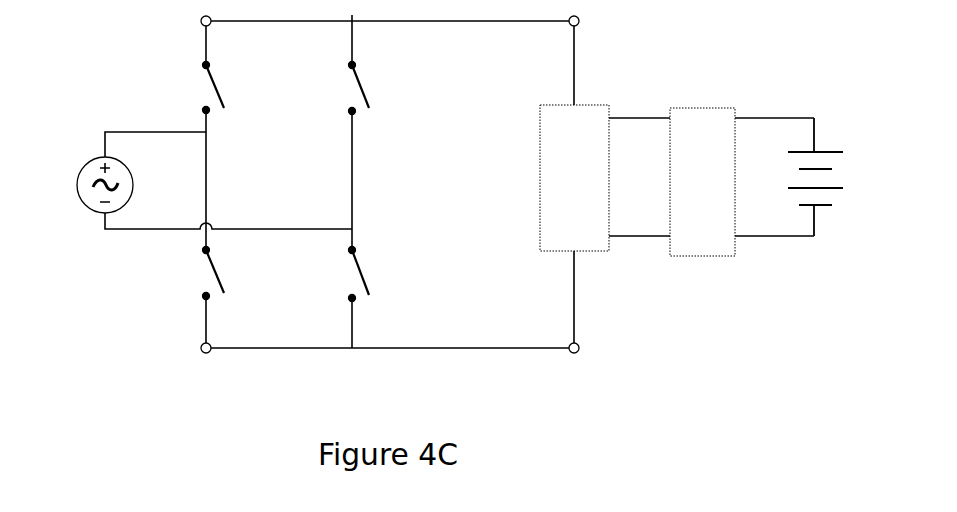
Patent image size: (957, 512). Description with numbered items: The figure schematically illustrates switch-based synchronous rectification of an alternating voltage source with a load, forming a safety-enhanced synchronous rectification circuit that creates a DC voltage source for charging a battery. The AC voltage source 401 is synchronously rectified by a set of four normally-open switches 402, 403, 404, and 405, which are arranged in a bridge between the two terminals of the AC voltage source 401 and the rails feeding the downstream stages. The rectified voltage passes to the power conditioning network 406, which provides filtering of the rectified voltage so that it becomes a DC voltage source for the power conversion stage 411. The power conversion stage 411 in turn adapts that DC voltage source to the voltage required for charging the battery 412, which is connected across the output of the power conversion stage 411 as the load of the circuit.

The AC voltage source 401 is at (83, 185).
The NO switch 402 is at (245, 88).
The NO switch 403 is at (389, 88).
The NO switch 404 is at (245, 274).
The NO switch 405 is at (393, 274).
The power conditioning network 406 is at (574, 178).
The power conversion stage 411 is at (702, 182).
The battery 412 is at (841, 177).